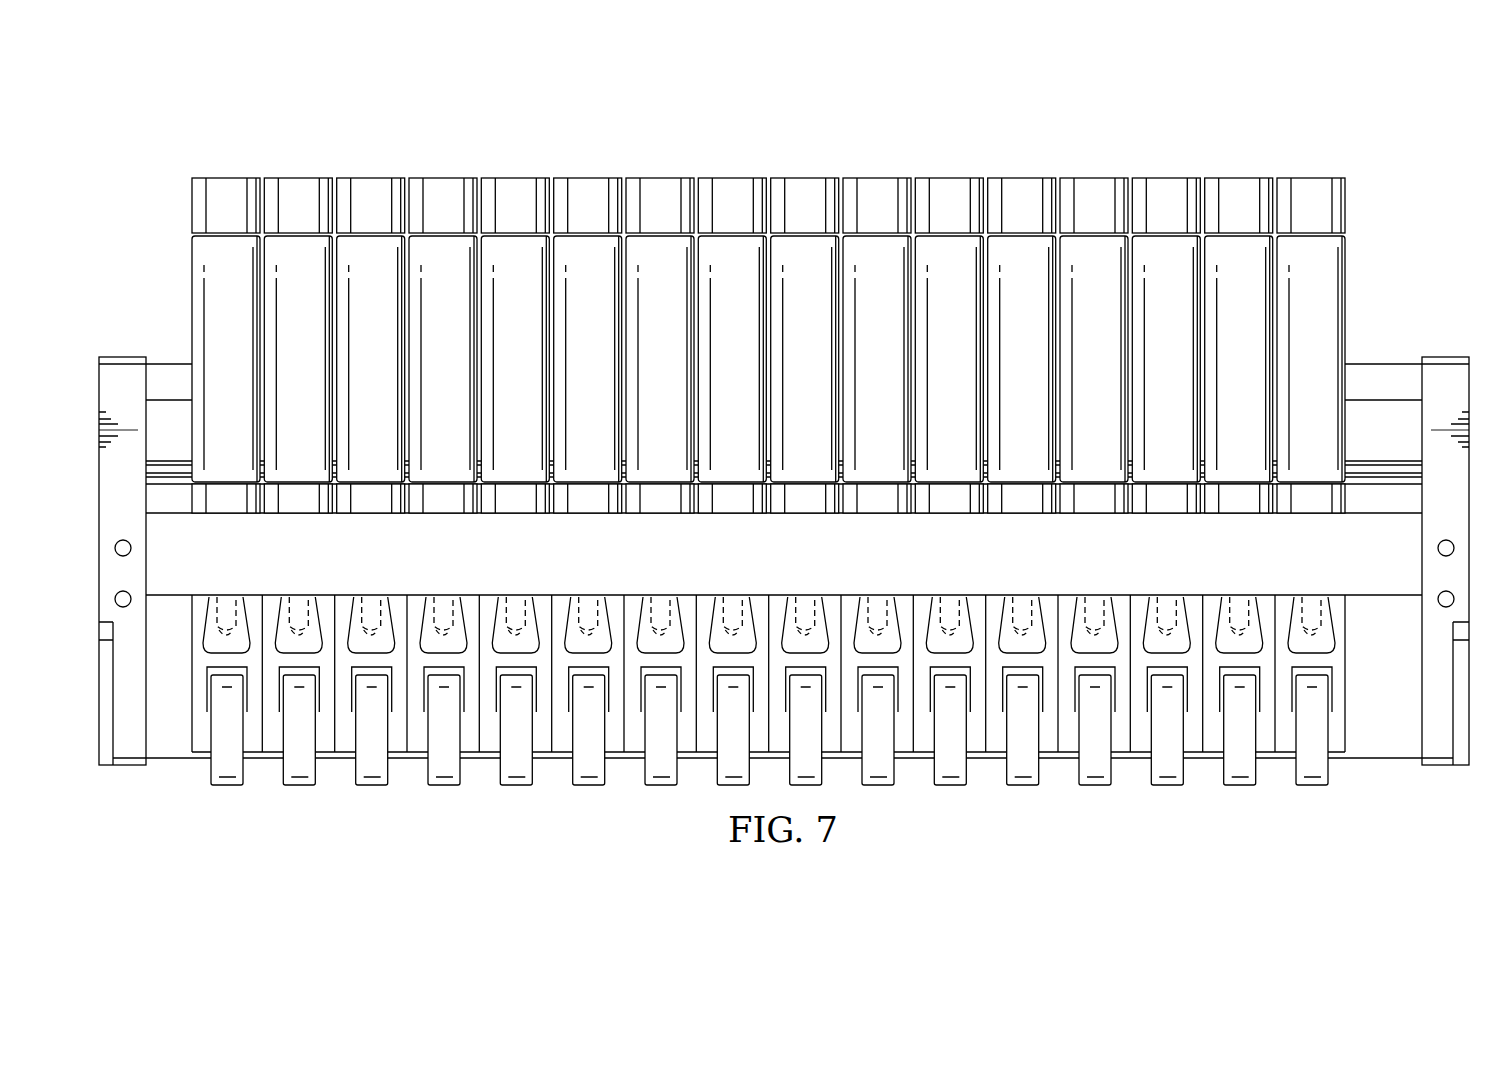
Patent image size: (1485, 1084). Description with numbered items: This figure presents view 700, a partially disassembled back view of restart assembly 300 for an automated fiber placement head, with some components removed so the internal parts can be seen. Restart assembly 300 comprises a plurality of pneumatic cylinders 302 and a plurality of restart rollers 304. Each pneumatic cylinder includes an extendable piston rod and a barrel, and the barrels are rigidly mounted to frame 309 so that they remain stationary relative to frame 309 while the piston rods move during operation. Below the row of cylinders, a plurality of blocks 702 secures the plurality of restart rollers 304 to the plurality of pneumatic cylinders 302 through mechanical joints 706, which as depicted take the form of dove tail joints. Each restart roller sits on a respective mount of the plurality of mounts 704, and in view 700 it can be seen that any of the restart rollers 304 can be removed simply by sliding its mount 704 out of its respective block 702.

The view 700 is at (300, 72).
The restart assembly 300 is at (582, 122).
The plurality of pneumatic cylinders 302 is at (185, 268).
The frame 309 is at (1383, 364).
The plurality of blocks 702 is at (350, 608).
The plurality of mounts 704 is at (400, 612).
The mechanical joints 706 is at (1333, 605).
The plurality of restart rollers 304 is at (441, 793).